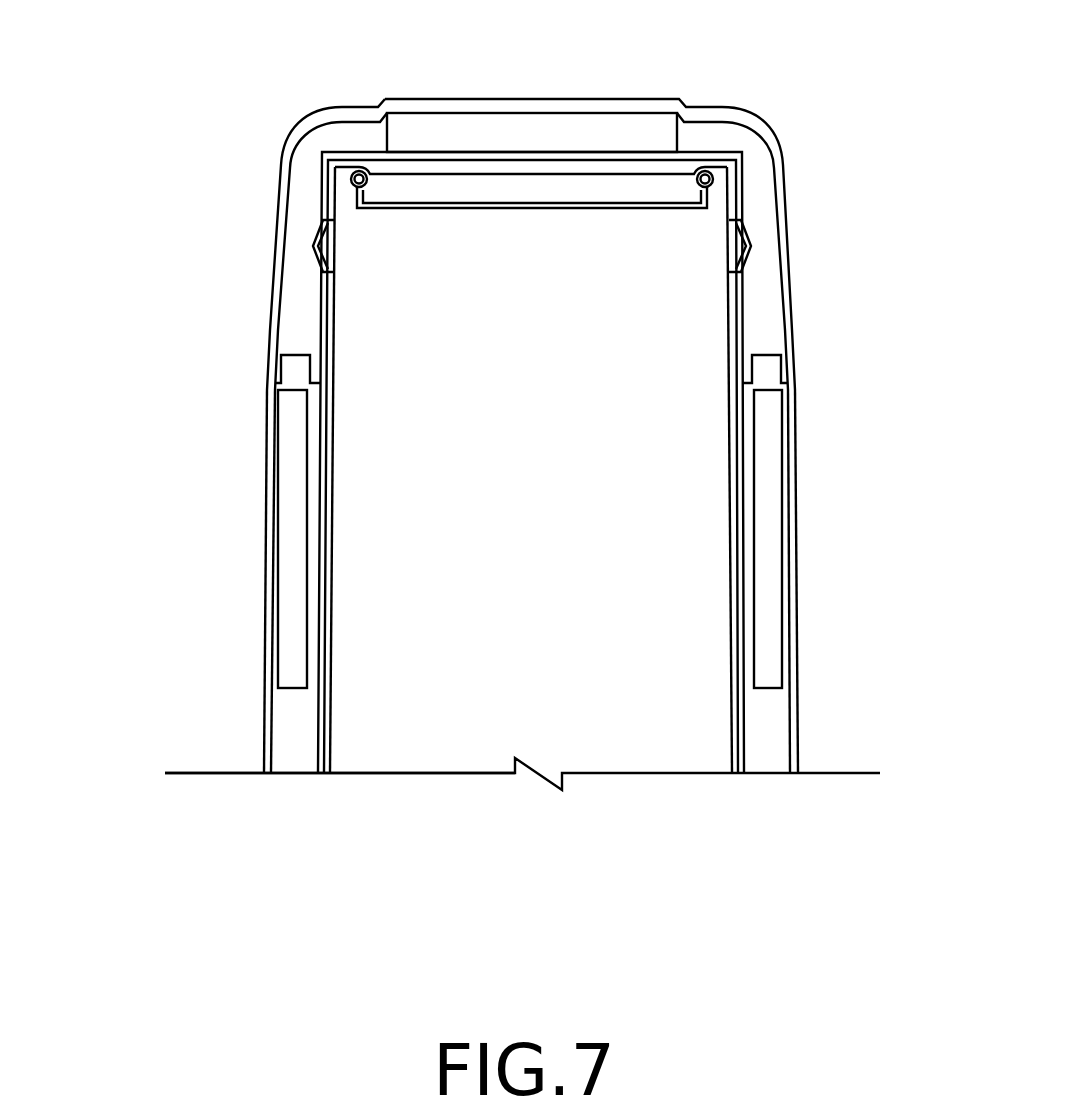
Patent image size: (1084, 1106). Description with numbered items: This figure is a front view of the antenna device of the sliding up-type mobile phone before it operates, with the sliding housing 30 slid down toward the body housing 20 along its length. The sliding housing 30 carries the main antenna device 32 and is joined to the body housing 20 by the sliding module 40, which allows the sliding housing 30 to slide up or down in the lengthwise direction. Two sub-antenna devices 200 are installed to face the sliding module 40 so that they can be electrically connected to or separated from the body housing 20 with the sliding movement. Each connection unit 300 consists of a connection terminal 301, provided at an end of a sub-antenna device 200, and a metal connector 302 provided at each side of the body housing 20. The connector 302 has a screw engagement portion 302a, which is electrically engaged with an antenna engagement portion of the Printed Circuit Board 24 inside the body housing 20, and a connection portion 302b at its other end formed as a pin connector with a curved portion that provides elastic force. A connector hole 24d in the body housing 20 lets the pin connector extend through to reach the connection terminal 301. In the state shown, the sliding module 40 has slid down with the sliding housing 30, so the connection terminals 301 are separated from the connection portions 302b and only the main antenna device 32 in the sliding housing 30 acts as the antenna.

The body housing 20 is at (815, 668).
The Printed Circuit Board (PCB) 24 is at (418, 735).
The connector hole 24d is at (750, 272).
The sliding housing 30 is at (612, 88).
The main antenna device 32 is at (433, 133).
The sliding module 40 is at (793, 481).
The sub-antenna device 200 is at (290, 554).
The connection unit 300 is at (122, 212).
The connection terminal 301 is at (263, 372).
The connector 302 is at (330, 222).
The screw engagement portion 302a is at (708, 166).
The connection portion 302b is at (752, 254).